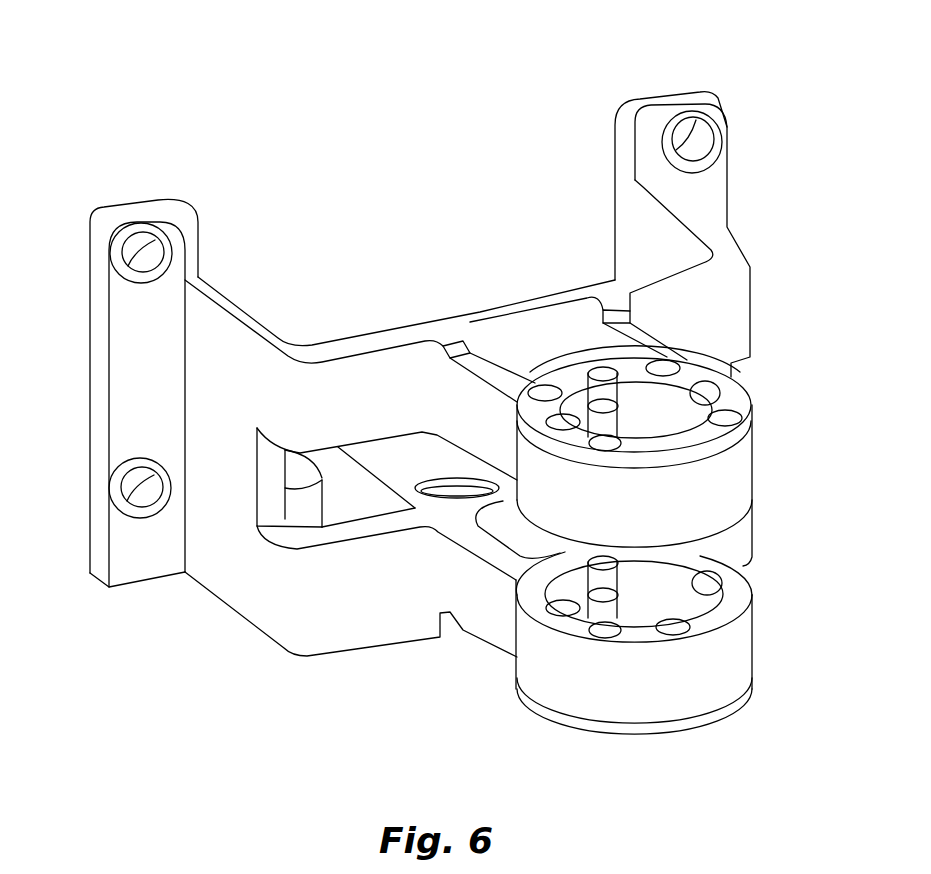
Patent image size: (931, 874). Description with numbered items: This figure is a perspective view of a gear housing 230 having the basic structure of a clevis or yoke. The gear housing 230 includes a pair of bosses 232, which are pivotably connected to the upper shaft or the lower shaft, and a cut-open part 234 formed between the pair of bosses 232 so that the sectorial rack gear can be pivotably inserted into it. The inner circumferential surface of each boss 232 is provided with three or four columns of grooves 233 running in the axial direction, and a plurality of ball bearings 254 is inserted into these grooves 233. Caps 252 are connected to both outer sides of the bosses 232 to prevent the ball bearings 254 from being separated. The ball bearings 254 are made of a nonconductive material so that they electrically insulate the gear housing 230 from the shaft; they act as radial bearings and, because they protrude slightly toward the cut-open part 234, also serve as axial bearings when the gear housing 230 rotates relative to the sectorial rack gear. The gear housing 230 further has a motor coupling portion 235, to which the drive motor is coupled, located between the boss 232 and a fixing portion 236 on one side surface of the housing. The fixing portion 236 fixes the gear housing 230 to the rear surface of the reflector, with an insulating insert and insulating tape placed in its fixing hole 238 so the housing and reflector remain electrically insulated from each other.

The gear housing 230 is at (215, 48).
The boss 232 is at (713, 663).
The groove 233 is at (670, 625).
The cut-open part 234 is at (772, 500).
The motor coupling portion 235 is at (360, 497).
The fixing portion 236 is at (133, 386).
The fixing hole 238 is at (125, 258).
The cap 252 is at (747, 386).
The ball bearing 254 is at (603, 607).